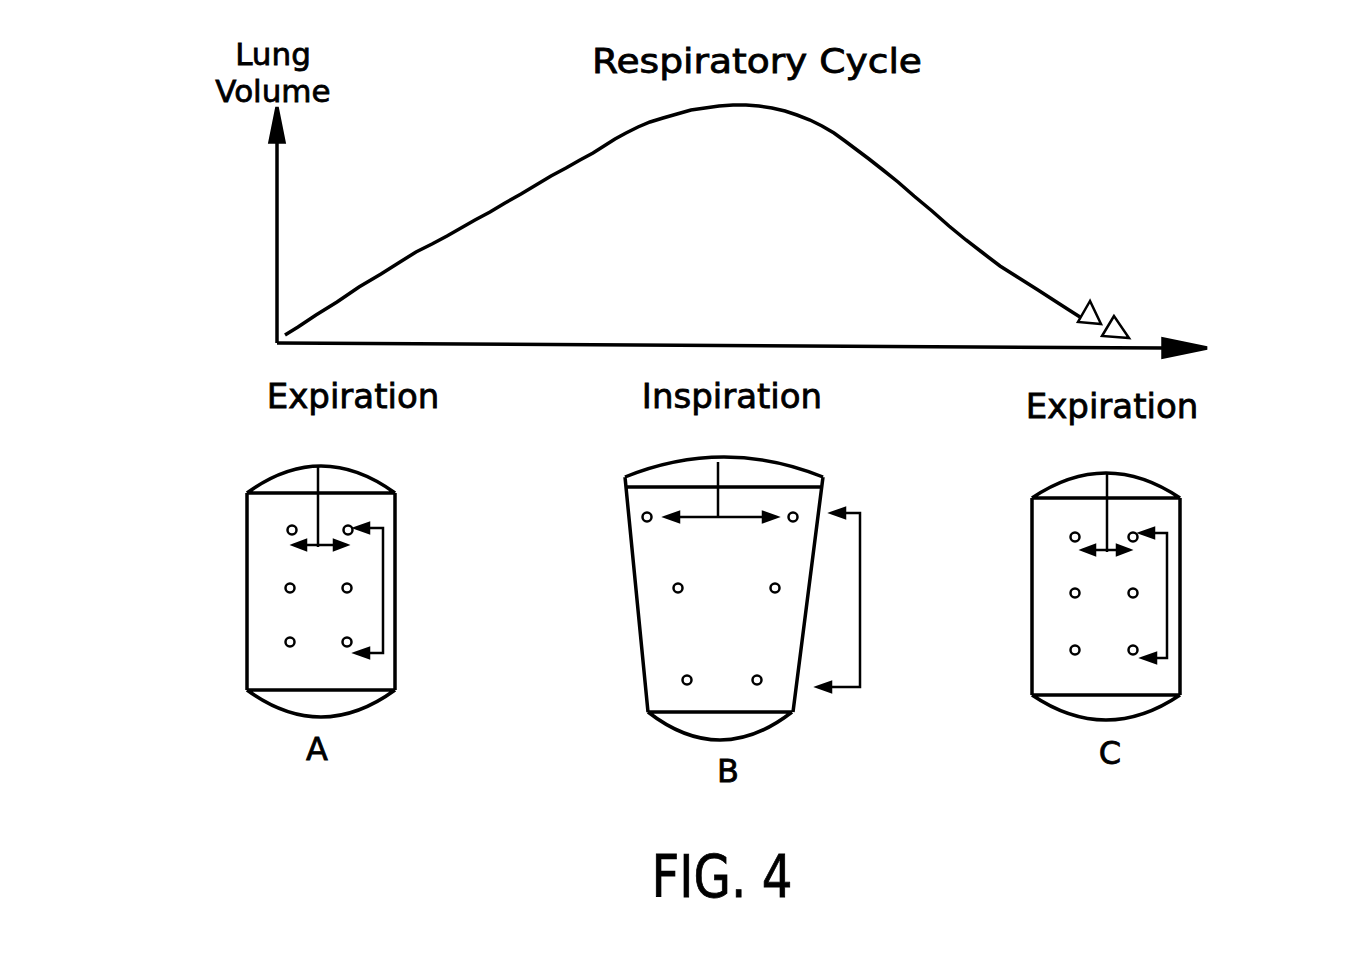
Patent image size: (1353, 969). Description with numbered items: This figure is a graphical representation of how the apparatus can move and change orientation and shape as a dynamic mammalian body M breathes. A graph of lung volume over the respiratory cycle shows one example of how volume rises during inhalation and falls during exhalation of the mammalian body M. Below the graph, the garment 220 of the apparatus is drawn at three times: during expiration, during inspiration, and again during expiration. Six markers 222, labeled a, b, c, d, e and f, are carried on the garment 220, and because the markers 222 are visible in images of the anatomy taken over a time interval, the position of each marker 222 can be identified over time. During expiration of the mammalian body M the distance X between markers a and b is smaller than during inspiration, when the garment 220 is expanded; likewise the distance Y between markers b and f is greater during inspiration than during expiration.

The garment 220 is at (385, 505).
The markers 222 is at (288, 533).
The distance between markers a and b X is at (318, 465).
The distance between markers b and f Y is at (383, 590).
The mammalian body M is at (382, 475).